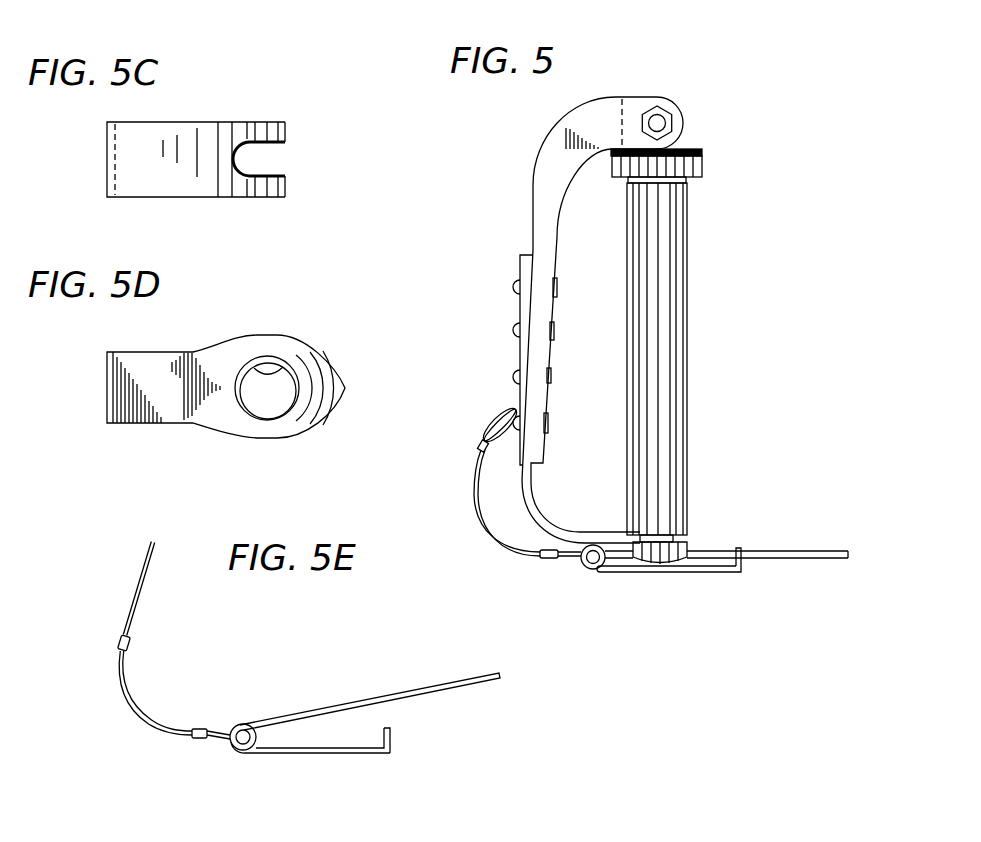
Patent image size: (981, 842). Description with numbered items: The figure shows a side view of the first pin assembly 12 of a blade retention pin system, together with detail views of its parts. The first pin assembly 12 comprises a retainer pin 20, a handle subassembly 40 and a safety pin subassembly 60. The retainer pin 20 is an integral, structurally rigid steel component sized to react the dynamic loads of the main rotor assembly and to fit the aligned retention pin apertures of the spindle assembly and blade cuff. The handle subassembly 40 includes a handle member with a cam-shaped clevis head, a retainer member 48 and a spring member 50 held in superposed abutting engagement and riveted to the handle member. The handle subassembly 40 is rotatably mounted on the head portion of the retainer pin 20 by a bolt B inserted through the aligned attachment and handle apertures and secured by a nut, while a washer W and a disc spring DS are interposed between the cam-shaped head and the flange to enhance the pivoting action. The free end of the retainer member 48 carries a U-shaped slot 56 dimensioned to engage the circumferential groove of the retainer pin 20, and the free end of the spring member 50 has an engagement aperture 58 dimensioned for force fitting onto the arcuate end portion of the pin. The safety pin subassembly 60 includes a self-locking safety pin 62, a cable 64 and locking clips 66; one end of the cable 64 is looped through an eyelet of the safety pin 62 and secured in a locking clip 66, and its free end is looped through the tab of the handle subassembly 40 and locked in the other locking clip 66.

In FIG. 5, the first pin assembly 12 is at (731, 155).
In FIG. 5, the retainer pin 20 is at (701, 311).
In FIG. 5, the handle subassembly 40 is at (524, 212).
In FIG. 5C, the retainer member 48 is at (184, 113).
In FIG. 5D, the spring member 50 is at (148, 343).
In FIG. 5C, the U-shaped slot 56 is at (272, 147).
In FIG. 5D, the engagement aperture 58 is at (285, 366).
In FIG. 5, the safety pin subassembly 60 is at (579, 572).
In FIG. 5E, the safety pin subassembly 60 is at (189, 661).
In FIG. 5E, the safety pin 62 is at (418, 688).
In FIG. 5E, the cable 64 is at (127, 716).
In FIG. 5E, the locking clips 66 is at (131, 643).
In FIG. 5, the bolt B is at (660, 121).
In FIG. 5, the washer W is at (690, 149).
In FIG. 5, the disc spring DS is at (704, 155).